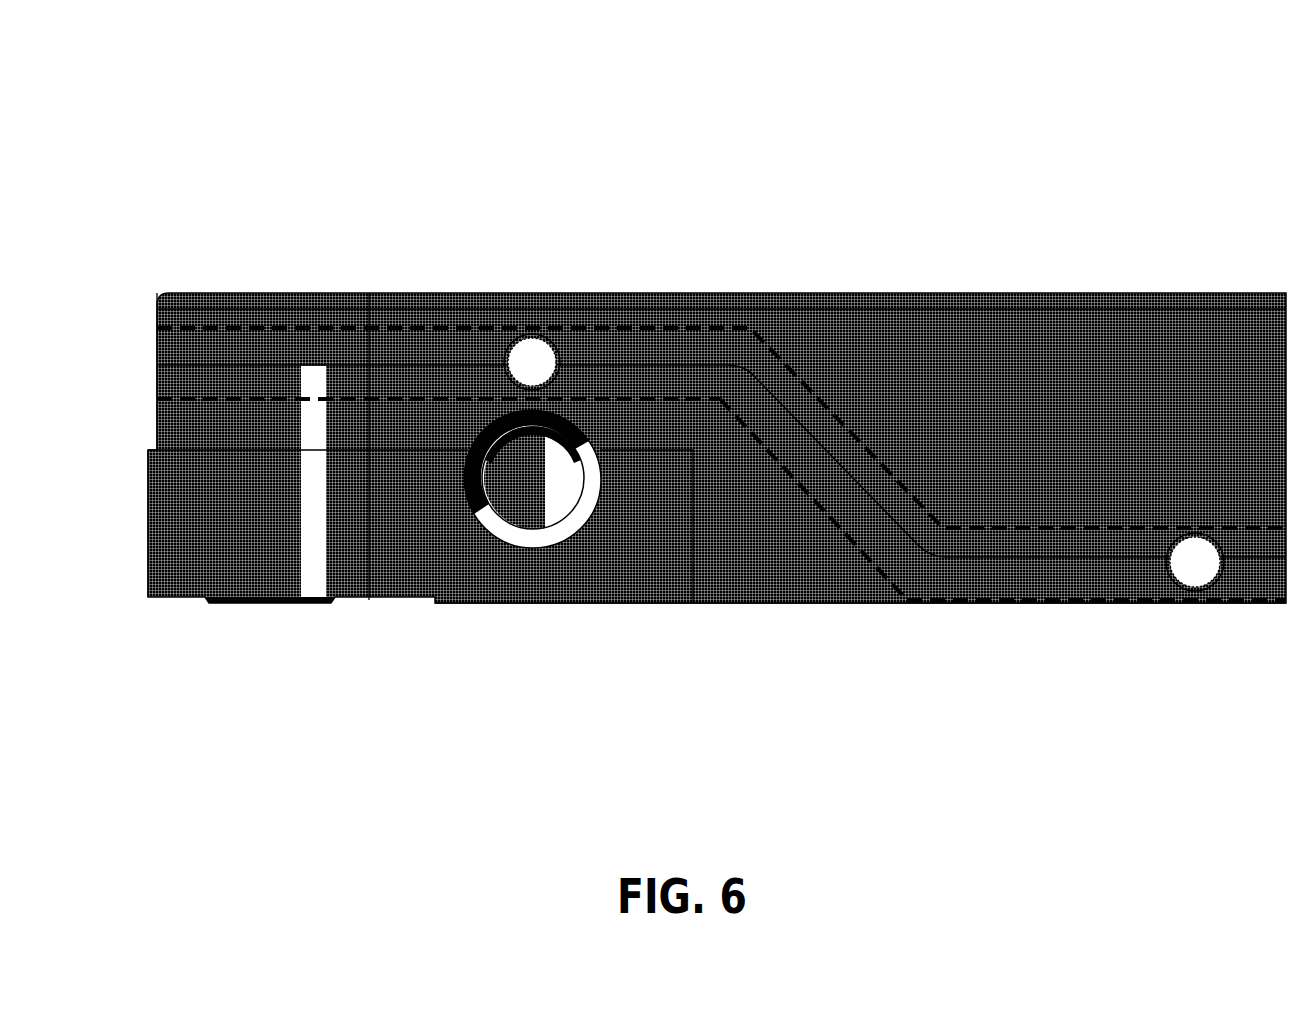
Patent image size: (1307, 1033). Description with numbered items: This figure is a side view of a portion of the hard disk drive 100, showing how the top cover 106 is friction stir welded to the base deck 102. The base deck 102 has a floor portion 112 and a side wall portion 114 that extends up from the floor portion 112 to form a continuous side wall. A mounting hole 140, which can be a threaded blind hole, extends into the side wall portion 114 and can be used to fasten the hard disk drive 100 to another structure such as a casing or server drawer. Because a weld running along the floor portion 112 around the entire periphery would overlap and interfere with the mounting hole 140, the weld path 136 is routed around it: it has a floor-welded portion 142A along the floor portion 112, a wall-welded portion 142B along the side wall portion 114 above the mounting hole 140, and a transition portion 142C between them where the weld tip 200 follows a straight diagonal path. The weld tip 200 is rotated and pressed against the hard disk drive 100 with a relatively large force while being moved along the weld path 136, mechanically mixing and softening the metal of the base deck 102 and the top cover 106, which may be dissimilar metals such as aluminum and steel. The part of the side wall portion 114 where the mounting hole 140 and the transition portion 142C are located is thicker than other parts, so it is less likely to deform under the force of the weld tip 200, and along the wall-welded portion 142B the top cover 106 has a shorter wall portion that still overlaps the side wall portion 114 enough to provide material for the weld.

The hard disk drive 100 is at (208, 124).
The base deck 102 is at (757, 593).
The top cover 106 is at (938, 297).
The floor portion 112 is at (123, 564).
The side wall portion 114 is at (122, 394).
The weld path 136 is at (693, 326).
The mounting hole 140 is at (533, 528).
The floor-welded portion 142A is at (1053, 626).
The wall-welded portion 142B is at (288, 436).
The transition portion 142C is at (829, 570).
The weld tip 200 is at (532, 352).